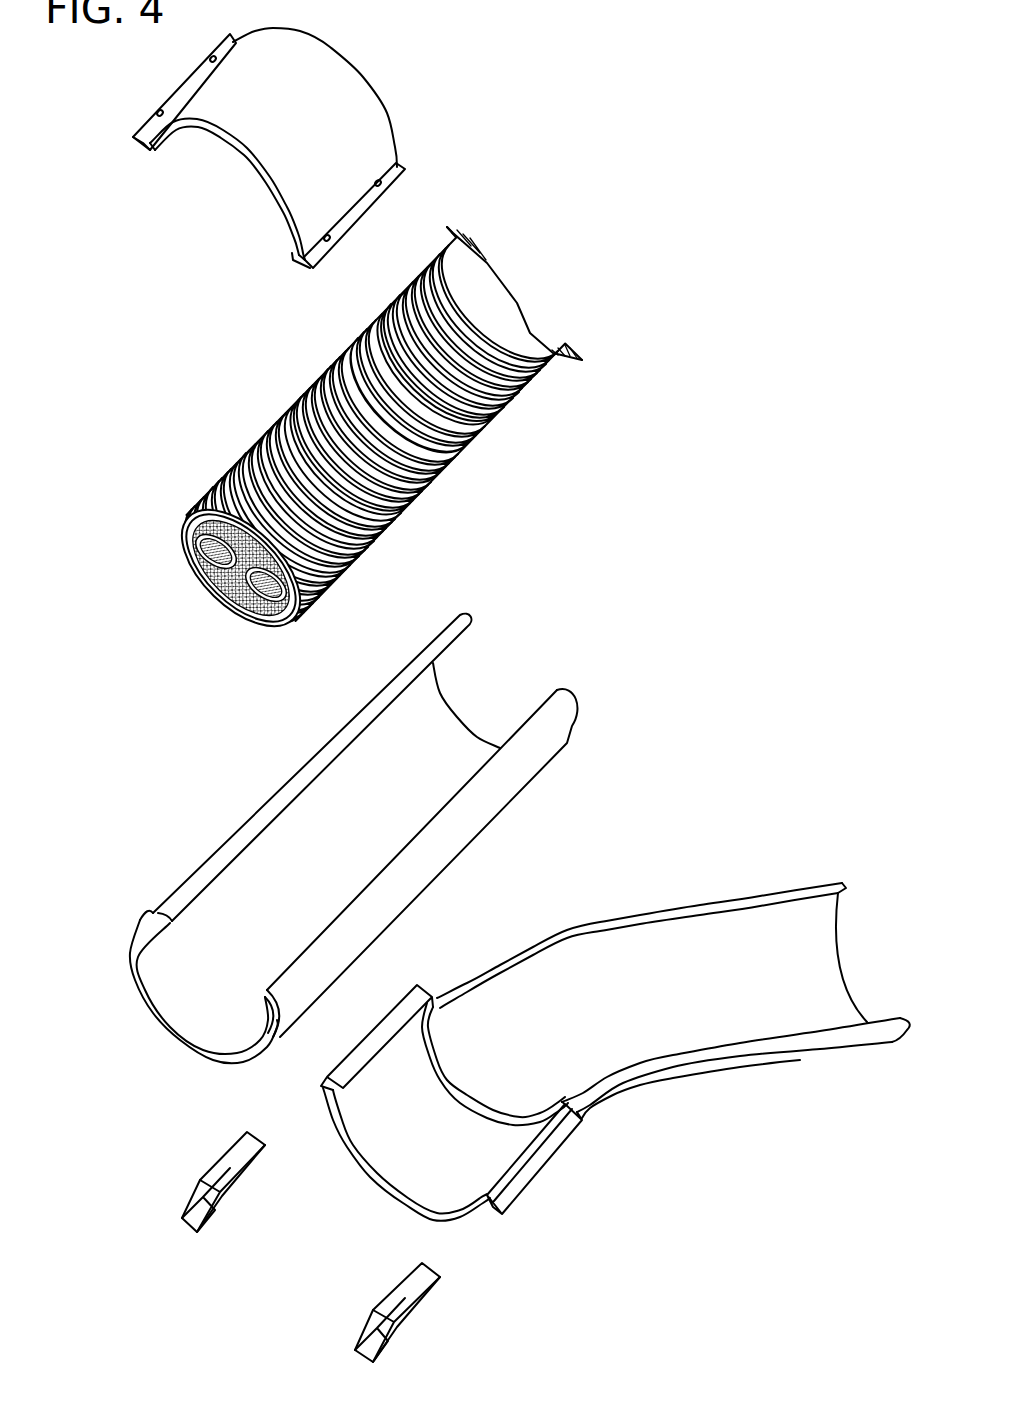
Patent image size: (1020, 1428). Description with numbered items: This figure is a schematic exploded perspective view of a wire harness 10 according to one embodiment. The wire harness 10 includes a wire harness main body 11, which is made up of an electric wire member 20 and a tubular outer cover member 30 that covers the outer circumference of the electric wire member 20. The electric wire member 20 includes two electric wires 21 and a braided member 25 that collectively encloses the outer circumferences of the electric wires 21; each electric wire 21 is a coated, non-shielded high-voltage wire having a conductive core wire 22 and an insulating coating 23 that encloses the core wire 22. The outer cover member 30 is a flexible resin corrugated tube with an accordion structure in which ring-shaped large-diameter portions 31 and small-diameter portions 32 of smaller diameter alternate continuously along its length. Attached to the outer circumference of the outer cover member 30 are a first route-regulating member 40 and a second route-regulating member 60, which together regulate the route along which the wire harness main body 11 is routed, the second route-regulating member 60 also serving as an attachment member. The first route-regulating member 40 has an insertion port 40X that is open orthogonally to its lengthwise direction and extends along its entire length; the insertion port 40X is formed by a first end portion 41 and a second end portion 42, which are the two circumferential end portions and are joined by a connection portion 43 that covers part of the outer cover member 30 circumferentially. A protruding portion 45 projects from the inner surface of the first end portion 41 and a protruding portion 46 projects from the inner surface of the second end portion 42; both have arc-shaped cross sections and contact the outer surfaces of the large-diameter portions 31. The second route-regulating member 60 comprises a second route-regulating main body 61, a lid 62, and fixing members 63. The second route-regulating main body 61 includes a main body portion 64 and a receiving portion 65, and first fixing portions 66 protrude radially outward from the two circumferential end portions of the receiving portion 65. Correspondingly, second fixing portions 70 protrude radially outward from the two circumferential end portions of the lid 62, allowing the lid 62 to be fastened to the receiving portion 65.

The wire harness 10 is at (801, 97).
The wire harness main body 11 is at (298, 397).
The electric wire member 20 is at (316, 686).
The electric wire 21 is at (240, 600).
The core wire 22 is at (193, 567).
The insulating coating 23 is at (223, 580).
The braided member 25 is at (267, 617).
The outer cover member 30 is at (122, 441).
The large-diameter portion 31 is at (233, 497).
The small-diameter portion 32 is at (217, 510).
The first route-regulating member 40 is at (480, 841).
The insertion port 40X is at (356, 870).
The first end portion 41 is at (203, 873).
The second end portion 42 is at (305, 938).
The connection portion 43 is at (410, 901).
The protruding portion 45 is at (168, 912).
The protruding portion 46 is at (257, 993).
The second route-regulating member 60 is at (797, 1059).
The second route-regulating main body 61 is at (771, 890).
The lid 62 is at (364, 108).
The fixing member 63 is at (220, 1150).
The main body portion 64 is at (705, 900).
The receiving portion 65 is at (385, 1178).
The first fixing portion 66 is at (372, 1020).
The second fixing portion 70 is at (175, 84).